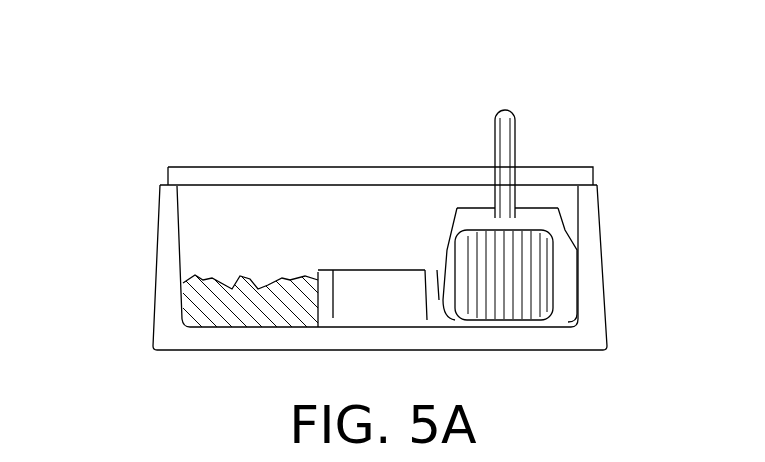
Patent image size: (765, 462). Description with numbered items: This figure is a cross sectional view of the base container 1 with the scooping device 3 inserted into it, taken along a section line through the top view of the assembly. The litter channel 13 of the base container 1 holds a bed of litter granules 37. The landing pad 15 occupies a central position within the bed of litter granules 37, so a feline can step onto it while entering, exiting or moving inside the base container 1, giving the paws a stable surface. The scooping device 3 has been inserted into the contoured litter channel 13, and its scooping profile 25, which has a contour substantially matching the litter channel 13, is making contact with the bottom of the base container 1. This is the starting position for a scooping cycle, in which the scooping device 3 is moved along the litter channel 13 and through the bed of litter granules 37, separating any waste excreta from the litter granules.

The base container 1 is at (135, 340).
The scooping device 3 is at (522, 133).
The litter channel 13 is at (490, 307).
The landing pad 15 is at (386, 268).
The scooping profile 25 is at (452, 258).
The bed of litter granules 37 is at (253, 281).